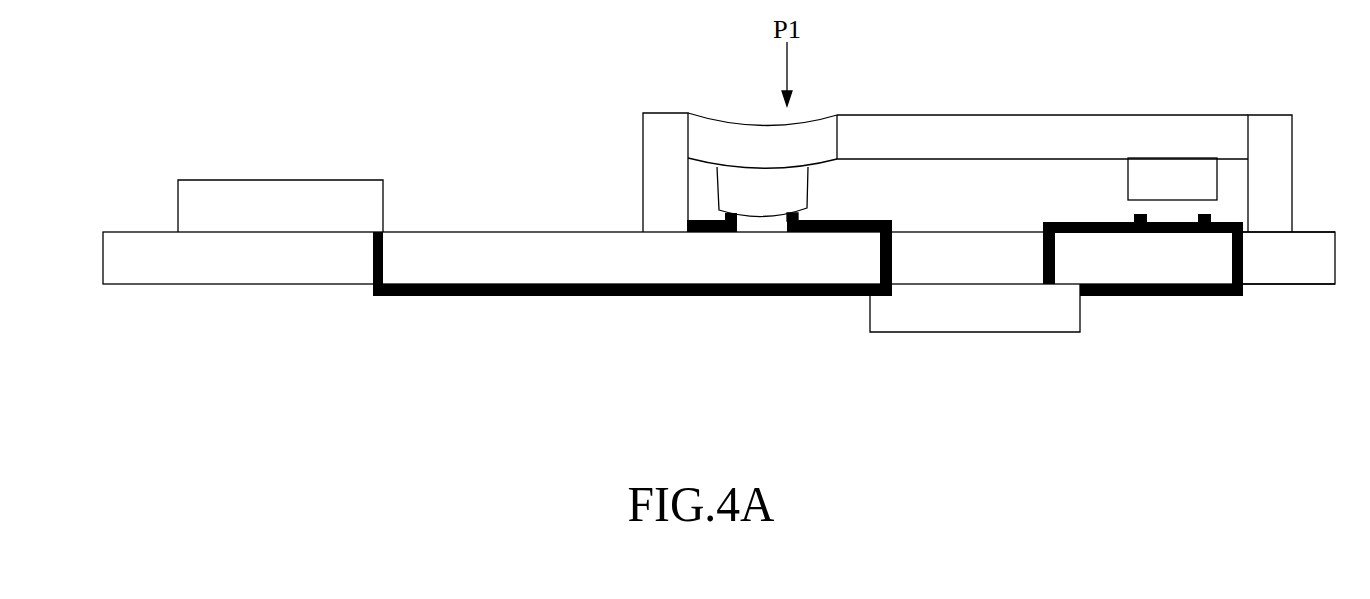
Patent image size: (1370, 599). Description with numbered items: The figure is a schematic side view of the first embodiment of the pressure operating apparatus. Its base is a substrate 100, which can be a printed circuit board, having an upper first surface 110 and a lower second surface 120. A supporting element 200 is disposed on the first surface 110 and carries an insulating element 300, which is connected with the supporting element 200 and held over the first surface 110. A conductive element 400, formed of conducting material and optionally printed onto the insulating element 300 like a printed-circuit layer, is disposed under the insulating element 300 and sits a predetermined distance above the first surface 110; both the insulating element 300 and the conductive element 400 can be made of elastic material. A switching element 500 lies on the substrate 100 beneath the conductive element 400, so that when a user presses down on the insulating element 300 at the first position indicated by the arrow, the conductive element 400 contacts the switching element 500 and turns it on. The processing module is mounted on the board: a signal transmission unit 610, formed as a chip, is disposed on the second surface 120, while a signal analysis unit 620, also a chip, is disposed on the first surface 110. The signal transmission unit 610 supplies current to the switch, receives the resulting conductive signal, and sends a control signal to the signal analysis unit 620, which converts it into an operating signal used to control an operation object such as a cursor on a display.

The substrate 100 is at (277, 268).
The first surface 110 is at (1313, 233).
The second surface 120 is at (1303, 288).
The supporting element 200 is at (657, 167).
The insulating element 300 is at (957, 132).
The conductive element 400 is at (745, 192).
The switching element 500 is at (803, 212).
The signal transmission unit 610 is at (937, 315).
The signal analysis unit 620 is at (277, 193).